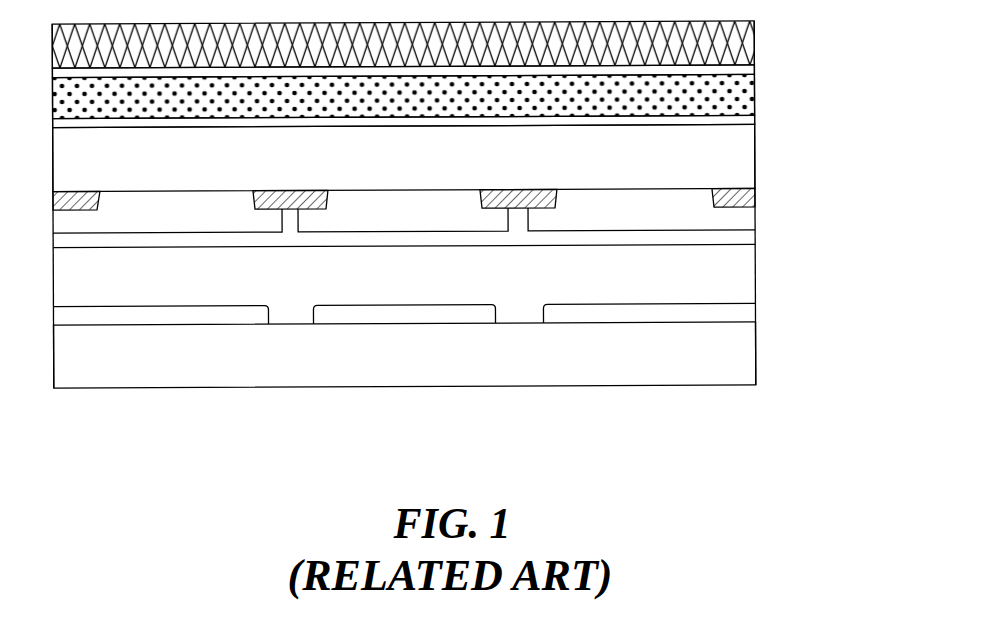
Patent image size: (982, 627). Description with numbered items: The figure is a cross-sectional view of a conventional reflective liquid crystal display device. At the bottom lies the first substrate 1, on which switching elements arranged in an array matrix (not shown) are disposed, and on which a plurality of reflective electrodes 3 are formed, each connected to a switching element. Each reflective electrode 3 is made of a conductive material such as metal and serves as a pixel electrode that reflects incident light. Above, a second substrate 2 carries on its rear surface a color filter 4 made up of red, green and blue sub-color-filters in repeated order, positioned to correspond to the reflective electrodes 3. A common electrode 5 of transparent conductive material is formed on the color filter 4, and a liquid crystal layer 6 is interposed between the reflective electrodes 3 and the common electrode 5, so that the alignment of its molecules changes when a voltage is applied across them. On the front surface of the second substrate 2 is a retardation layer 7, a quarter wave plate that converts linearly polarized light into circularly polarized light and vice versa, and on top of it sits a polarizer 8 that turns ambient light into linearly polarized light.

The first substrate 1 is at (747, 368).
The second substrate 2 is at (740, 157).
The reflective electrode 3 is at (747, 313).
The color filter 4 is at (735, 218).
The common electrode 5 is at (728, 238).
The liquid crystal layer 6 is at (737, 283).
The retardation layer 7 is at (740, 97).
The polarizer 8 is at (743, 47).